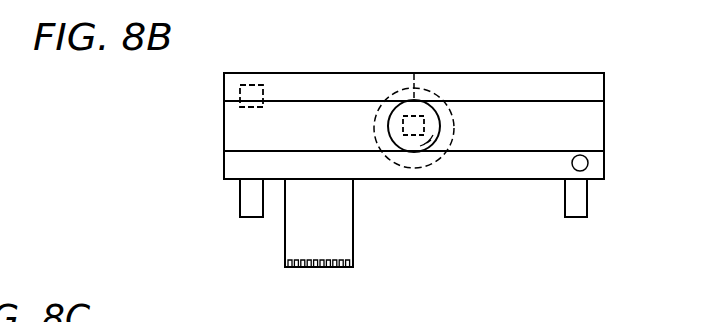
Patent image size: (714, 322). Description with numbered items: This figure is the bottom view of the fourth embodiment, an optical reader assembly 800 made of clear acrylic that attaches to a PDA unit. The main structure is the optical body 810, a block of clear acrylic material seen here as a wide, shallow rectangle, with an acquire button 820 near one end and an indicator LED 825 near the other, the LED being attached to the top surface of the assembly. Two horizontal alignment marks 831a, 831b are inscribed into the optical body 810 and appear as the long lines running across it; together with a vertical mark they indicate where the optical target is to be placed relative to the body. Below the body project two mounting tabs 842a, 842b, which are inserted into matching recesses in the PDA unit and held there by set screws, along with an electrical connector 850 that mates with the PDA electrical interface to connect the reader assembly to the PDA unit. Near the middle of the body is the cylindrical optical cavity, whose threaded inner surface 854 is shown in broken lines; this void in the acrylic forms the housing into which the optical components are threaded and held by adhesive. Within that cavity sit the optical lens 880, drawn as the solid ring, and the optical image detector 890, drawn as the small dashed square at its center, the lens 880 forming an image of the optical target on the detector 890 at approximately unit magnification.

The optical reader assembly 800 is at (488, 73).
The optical body 810 is at (604, 124).
The acquire button 820 is at (251, 84).
The indicator LED 825 is at (589, 163).
The horizontal alignment mark 831a is at (309, 100).
The horizontal alignment mark 831b is at (276, 151).
The mounting tab 842a is at (578, 218).
The mounting tab 842b is at (251, 218).
The electrical connector 850 is at (310, 268).
The threaded inner surface 854 is at (414, 168).
The optical lens 880 is at (411, 102).
The optical image detector 890 is at (421, 114).